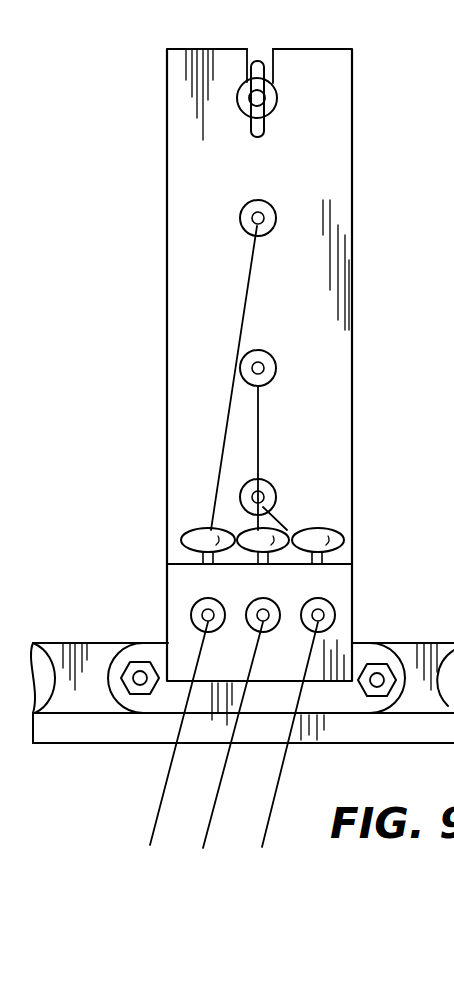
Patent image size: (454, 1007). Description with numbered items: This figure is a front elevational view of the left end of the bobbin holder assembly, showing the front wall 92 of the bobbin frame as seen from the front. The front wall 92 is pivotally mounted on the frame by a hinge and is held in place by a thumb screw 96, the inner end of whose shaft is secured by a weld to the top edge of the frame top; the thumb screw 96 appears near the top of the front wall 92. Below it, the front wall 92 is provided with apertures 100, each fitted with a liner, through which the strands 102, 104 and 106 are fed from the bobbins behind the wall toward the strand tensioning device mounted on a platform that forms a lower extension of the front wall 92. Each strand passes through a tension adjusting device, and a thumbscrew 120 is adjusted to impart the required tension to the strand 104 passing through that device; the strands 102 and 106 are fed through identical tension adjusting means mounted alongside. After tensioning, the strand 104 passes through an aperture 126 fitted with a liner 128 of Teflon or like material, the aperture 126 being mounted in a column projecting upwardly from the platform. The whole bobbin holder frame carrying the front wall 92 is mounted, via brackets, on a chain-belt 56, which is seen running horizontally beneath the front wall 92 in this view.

The chain-belt 56 is at (342, 702).
The front wall 92 is at (332, 185).
The thumb screw 96 is at (278, 102).
The aperture 100 is at (257, 202).
The strand 102 is at (247, 281).
The strand 104 is at (258, 420).
The strand 106 is at (283, 523).
The thumbscrew 120 is at (265, 542).
The aperture 126 is at (266, 618).
The liner 128 is at (316, 563).